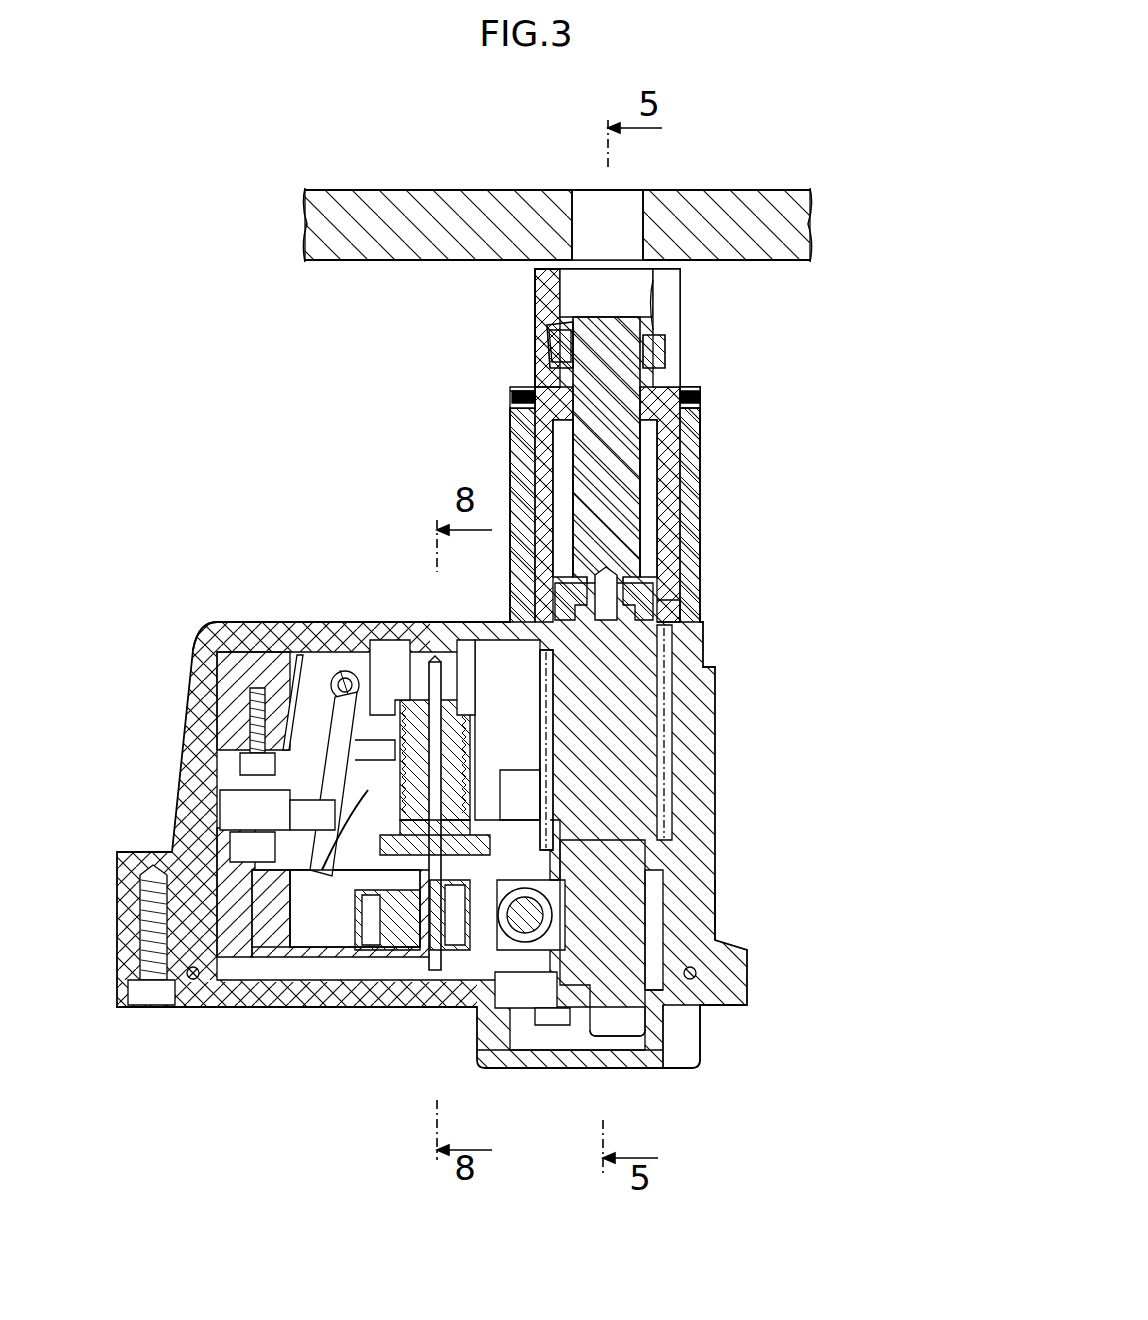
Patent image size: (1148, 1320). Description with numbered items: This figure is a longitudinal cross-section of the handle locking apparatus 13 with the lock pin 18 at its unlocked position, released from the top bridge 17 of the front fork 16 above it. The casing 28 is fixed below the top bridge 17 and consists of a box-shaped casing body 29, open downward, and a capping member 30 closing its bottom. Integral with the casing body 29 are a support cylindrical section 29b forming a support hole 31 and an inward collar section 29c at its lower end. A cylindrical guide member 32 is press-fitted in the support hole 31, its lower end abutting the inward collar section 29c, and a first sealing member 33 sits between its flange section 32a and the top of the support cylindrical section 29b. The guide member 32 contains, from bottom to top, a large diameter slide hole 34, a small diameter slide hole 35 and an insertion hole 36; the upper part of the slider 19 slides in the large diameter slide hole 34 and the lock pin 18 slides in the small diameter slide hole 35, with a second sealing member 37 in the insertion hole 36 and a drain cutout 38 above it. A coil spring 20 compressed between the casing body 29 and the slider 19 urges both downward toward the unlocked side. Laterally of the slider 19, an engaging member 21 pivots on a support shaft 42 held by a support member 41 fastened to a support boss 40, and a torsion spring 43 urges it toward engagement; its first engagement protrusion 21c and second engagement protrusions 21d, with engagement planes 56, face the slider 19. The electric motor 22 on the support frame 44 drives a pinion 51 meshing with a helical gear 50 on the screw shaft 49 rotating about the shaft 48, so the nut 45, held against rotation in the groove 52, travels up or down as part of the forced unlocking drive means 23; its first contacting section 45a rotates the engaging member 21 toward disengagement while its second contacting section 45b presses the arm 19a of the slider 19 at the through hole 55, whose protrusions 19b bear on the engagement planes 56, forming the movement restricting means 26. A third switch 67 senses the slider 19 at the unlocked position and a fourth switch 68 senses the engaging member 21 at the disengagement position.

The handle locking apparatus 13 is at (192, 626).
The front fork 16 is at (700, 188).
The top bridge 17 is at (752, 205).
The lock pin 18 is at (600, 327).
The slider 19 is at (637, 718).
The arm 19a is at (548, 835).
The protrusions 19b is at (367, 860).
The coil spring 20 is at (665, 650).
The engaging member 21 is at (307, 871).
The first engagement protrusion 21c is at (353, 748).
The second engagement protrusions 21d is at (340, 862).
The electric motor 22 is at (560, 887).
The forced unlocking drive means 23 is at (542, 727).
The movement restricting means 26 is at (546, 750).
The casing 28 is at (808, 885).
The casing body 29 is at (693, 887).
The support cylindrical section 29b is at (690, 455).
The inward collar section 29c is at (665, 620).
The capping member 30 is at (687, 1035).
The support hole 31 is at (672, 450).
The guide member 32 is at (555, 340).
The flange section 32a is at (522, 393).
The first sealing member 33 is at (513, 405).
The large diameter slide hole 34 is at (640, 540).
The small diameter slide hole 35 is at (630, 400).
The insertion hole 36 is at (650, 300).
The second sealing member 37 is at (658, 347).
The drain cutout 38 is at (665, 298).
The support boss 40 is at (237, 727).
The support member 41 is at (257, 690).
The support shaft 42 is at (345, 670).
The torsion spring 43 is at (290, 720).
The support frame 44 is at (372, 952).
The nut 45 is at (490, 800).
The first contacting section 45a is at (355, 815).
The second contacting section 45b is at (530, 785).
The shaft 48 is at (436, 975).
The screw shaft 49 is at (450, 723).
The helical gear 50 is at (500, 940).
The pinion 51 is at (585, 985).
The groove 52 is at (436, 660).
The through hole 55 is at (405, 947).
The engagement planes 56 is at (360, 800).
The third switch 67 is at (600, 1072).
The fourth switch 68 is at (233, 803).